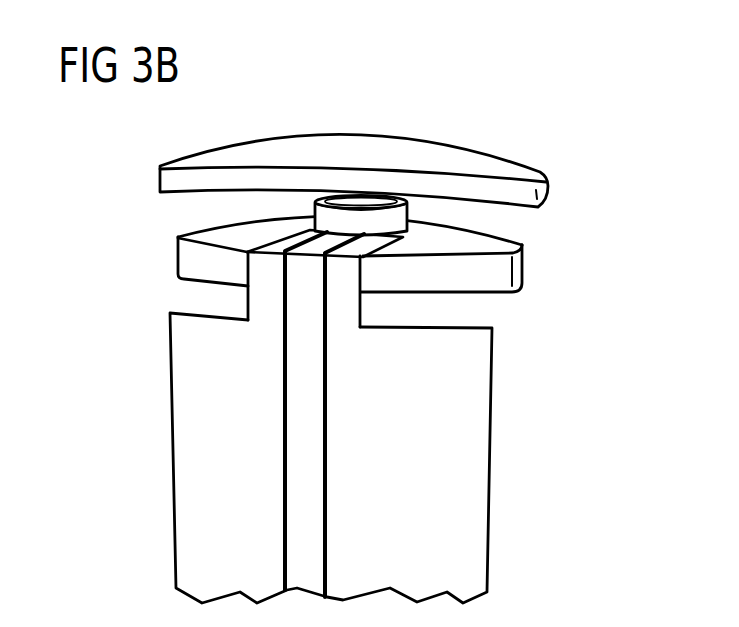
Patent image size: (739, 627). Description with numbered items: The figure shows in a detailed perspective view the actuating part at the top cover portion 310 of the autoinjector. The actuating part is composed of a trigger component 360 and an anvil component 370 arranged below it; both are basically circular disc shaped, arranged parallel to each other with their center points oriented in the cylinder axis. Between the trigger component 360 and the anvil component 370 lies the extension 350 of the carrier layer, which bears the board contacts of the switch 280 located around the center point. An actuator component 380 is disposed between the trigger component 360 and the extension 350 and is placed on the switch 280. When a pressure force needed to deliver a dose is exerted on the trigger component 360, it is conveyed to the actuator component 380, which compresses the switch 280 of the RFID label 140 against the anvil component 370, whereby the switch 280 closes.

The RFID label 140 is at (183, 390).
The switch 280 is at (407, 251).
The top cover portion 310 is at (323, 194).
The extension 350 is at (283, 246).
The trigger component 360 is at (482, 163).
The anvil component 370 is at (500, 272).
The actuator component 380 is at (367, 224).